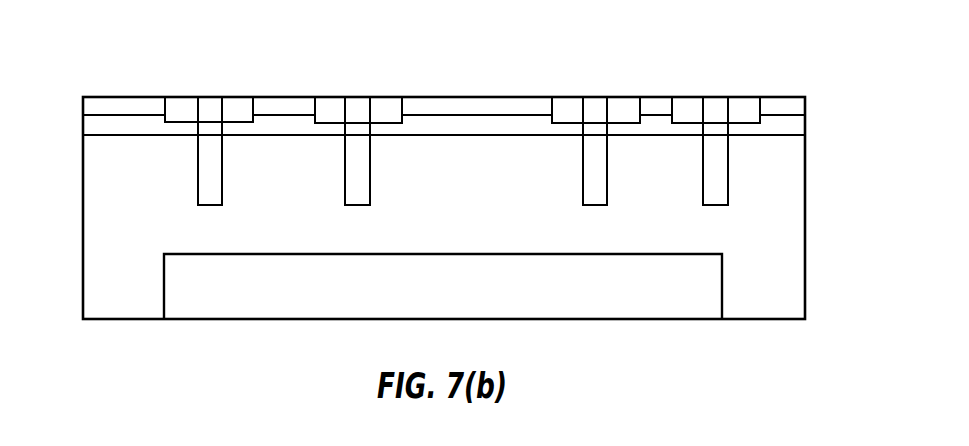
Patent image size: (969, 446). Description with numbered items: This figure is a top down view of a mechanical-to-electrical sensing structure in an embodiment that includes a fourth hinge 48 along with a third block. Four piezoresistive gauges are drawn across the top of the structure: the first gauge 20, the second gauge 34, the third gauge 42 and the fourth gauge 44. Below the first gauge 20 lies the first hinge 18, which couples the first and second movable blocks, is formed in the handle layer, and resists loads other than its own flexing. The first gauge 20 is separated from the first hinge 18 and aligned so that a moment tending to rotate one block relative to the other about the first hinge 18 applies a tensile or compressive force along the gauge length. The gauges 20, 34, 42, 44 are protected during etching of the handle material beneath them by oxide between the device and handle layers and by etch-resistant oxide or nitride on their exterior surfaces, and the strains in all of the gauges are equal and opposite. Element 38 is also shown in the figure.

The first hinge 18 is at (209, 183).
The first gauge 20 is at (208, 103).
The second gauge 34 is at (357, 104).
The trench 38 is at (595, 183).
The third gauge 42 is at (594, 105).
The fourth gauge 44 is at (716, 105).
The fourth hinge 48 is at (358, 183).